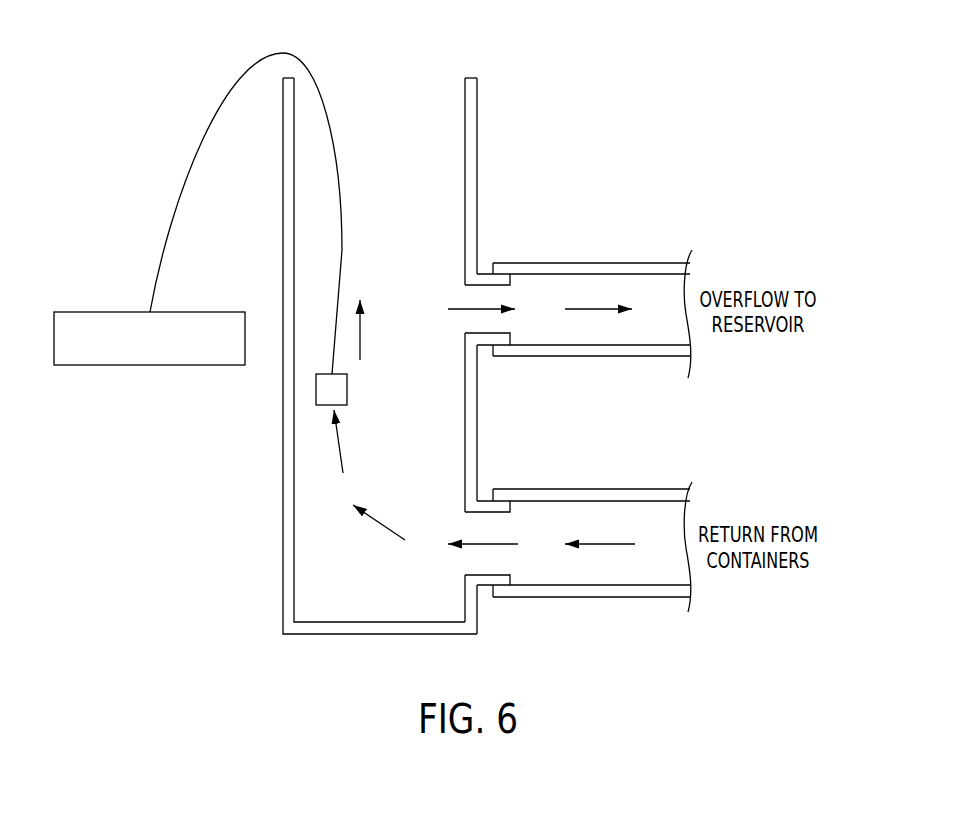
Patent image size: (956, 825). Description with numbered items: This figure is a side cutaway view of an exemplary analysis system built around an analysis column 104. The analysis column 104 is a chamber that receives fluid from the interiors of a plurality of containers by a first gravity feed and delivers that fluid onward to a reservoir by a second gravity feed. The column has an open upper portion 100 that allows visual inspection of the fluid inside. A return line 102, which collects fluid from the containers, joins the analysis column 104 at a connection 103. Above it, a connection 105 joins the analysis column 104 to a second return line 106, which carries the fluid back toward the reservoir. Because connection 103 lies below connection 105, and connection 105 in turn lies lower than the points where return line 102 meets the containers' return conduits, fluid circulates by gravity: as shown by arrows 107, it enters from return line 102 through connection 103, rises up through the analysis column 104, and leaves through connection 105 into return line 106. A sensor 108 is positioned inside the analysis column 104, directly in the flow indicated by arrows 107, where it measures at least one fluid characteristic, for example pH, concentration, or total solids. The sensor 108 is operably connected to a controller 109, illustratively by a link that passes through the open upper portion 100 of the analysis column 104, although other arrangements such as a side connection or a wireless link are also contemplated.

The open upper portion 100 is at (428, 78).
The return line 102 is at (618, 598).
The connection 103 is at (480, 499).
The analysis column 104 is at (283, 548).
The connection 105 is at (478, 273).
The return line 106 is at (610, 262).
The arrows 107 is at (448, 310).
The sensor 108 is at (347, 390).
The controller 109 is at (150, 365).